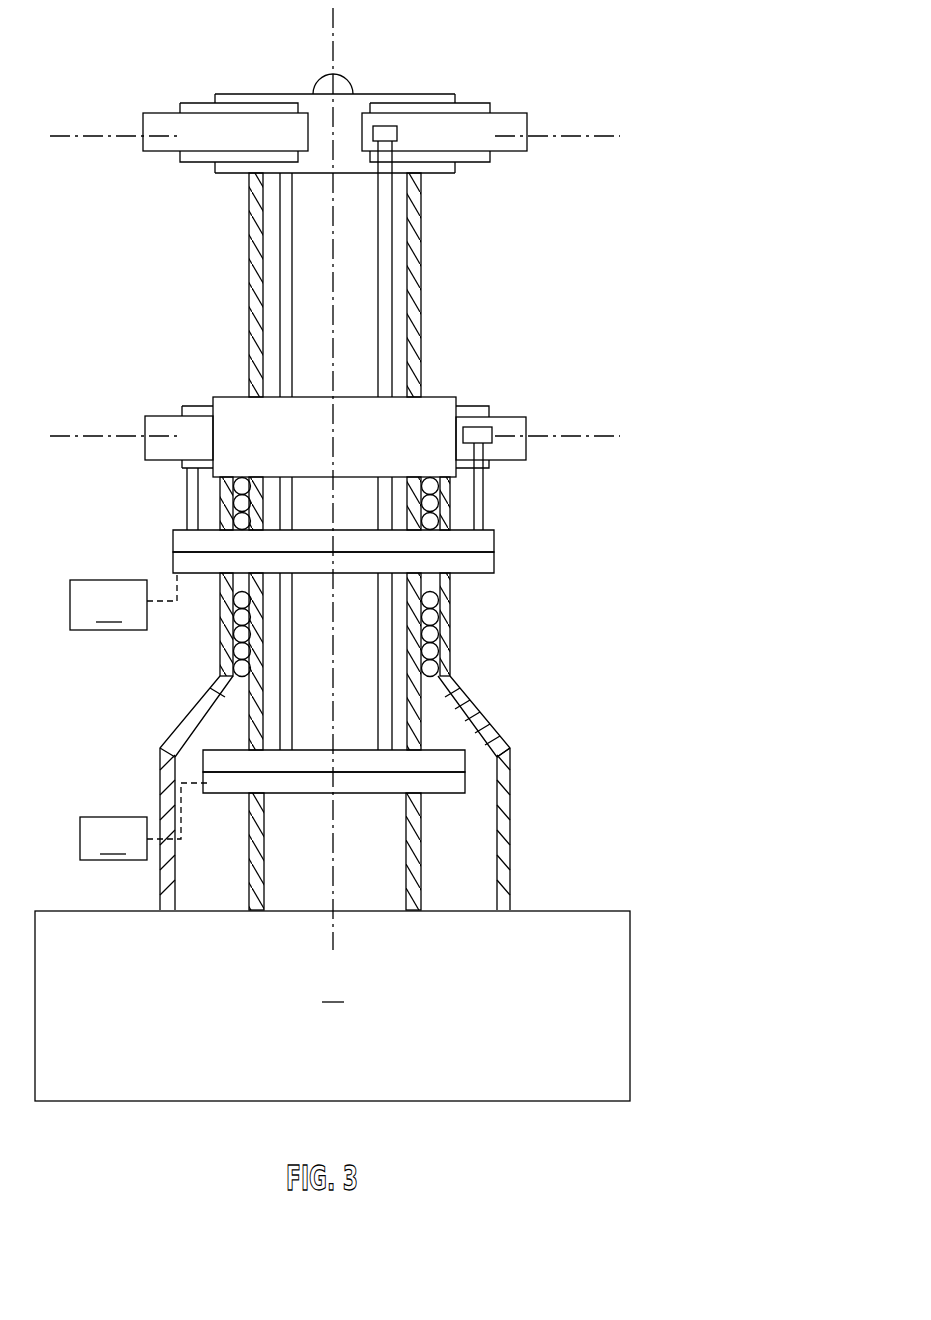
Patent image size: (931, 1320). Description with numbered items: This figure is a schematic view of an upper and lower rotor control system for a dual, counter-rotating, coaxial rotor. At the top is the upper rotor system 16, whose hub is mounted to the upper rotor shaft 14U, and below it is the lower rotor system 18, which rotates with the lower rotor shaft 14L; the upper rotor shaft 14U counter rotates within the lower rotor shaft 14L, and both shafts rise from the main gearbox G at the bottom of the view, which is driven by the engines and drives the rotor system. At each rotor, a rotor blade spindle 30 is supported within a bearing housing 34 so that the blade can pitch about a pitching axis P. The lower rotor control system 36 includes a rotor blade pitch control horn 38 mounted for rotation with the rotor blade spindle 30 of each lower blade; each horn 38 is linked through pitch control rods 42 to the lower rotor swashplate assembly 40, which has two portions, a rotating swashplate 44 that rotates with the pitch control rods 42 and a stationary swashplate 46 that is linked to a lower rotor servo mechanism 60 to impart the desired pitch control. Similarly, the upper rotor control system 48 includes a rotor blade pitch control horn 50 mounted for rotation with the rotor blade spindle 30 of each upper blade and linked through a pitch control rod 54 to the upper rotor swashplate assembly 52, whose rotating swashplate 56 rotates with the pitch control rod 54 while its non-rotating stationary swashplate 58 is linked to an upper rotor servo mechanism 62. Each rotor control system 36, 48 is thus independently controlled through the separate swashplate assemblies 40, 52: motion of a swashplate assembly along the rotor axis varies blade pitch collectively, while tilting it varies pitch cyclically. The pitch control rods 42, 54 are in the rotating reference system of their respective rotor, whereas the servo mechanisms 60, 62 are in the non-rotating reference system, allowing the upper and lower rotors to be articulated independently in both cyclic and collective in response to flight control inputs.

The upper rotor shaft 14U is at (422, 232).
The lower rotor shaft 14L is at (508, 765).
The upper rotor system 16 is at (552, 90).
The lower rotor system 18 is at (615, 420).
The rotor blade spindle 30 is at (470, 122).
The bearing housing 34 is at (248, 120).
The lower rotor control system 36 is at (542, 557).
The rotor blade pitch control horn 38 is at (483, 432).
The lower rotor swashplate assembly 40 is at (137, 562).
The pitch control rods 42 is at (483, 503).
The rotating swashplate 44 is at (182, 540).
The stationary swashplate 46 is at (472, 565).
The upper rotor control system 48 is at (170, 310).
The rotor blade pitch control horn 50 is at (388, 128).
The upper rotor swashplate assembly 52 is at (180, 777).
The pitch control rod 54 is at (392, 298).
The rotating swashplate 56 is at (213, 758).
The stationary swashplate 58 is at (227, 787).
The lower rotor servo mechanism 60 is at (123, 601).
The upper rotor servo mechanism 62 is at (145, 821).
The pitching axis P is at (587, 138).
The main gearbox G is at (332, 1006).